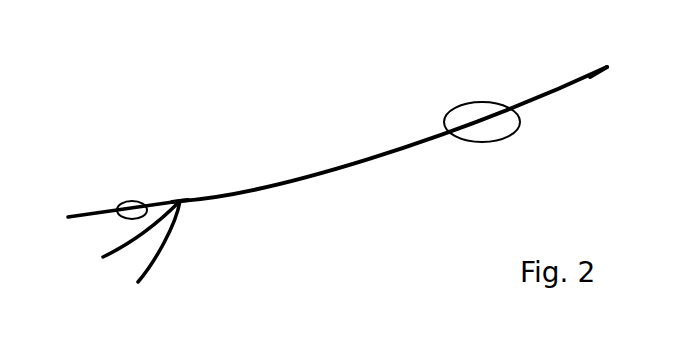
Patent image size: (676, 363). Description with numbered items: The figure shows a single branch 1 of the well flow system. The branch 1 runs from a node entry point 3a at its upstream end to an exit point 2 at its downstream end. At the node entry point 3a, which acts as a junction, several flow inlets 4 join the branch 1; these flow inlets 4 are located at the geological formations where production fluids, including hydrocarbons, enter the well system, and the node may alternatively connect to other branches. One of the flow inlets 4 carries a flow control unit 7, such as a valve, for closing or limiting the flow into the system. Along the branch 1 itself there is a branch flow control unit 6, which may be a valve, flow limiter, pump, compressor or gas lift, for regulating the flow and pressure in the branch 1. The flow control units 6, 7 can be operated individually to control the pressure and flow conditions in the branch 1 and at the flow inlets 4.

The branch 1 is at (393, 134).
The exit point 2 is at (612, 58).
The node entry point 3a is at (174, 186).
The flow inlets 4 is at (105, 256).
The branch flow control unit 6 is at (484, 131).
The flow control unit 7 is at (132, 187).